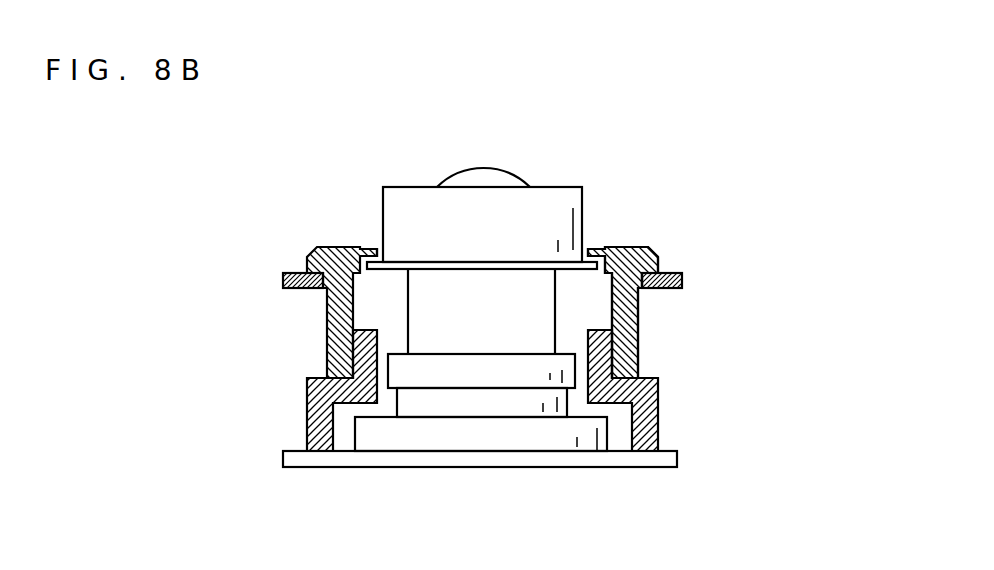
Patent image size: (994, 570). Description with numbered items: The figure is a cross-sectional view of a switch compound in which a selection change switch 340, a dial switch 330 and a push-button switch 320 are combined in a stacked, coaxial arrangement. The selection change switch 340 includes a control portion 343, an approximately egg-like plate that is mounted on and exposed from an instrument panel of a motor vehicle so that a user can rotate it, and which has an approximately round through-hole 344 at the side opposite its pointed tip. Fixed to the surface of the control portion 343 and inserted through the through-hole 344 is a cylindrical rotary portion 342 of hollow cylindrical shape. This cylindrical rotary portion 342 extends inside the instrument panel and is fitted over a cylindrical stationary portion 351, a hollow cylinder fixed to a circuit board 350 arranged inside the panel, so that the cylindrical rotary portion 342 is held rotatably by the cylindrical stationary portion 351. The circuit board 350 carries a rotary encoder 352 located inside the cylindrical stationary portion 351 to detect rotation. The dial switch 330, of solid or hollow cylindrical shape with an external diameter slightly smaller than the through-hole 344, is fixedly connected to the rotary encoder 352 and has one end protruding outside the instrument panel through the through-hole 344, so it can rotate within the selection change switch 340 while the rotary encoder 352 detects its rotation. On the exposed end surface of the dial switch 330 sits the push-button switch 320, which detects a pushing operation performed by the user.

The push-button switch 320 is at (495, 173).
The dial switch 330 is at (557, 182).
The selection change switch 340 is at (637, 246).
The cylindrical rotary portion 342 is at (627, 332).
The control portion 343 is at (648, 257).
The through-hole 344 is at (383, 252).
The circuit board 350 is at (678, 462).
The cylindrical stationary portion 351 is at (652, 403).
The rotary encoder 352 is at (540, 442).